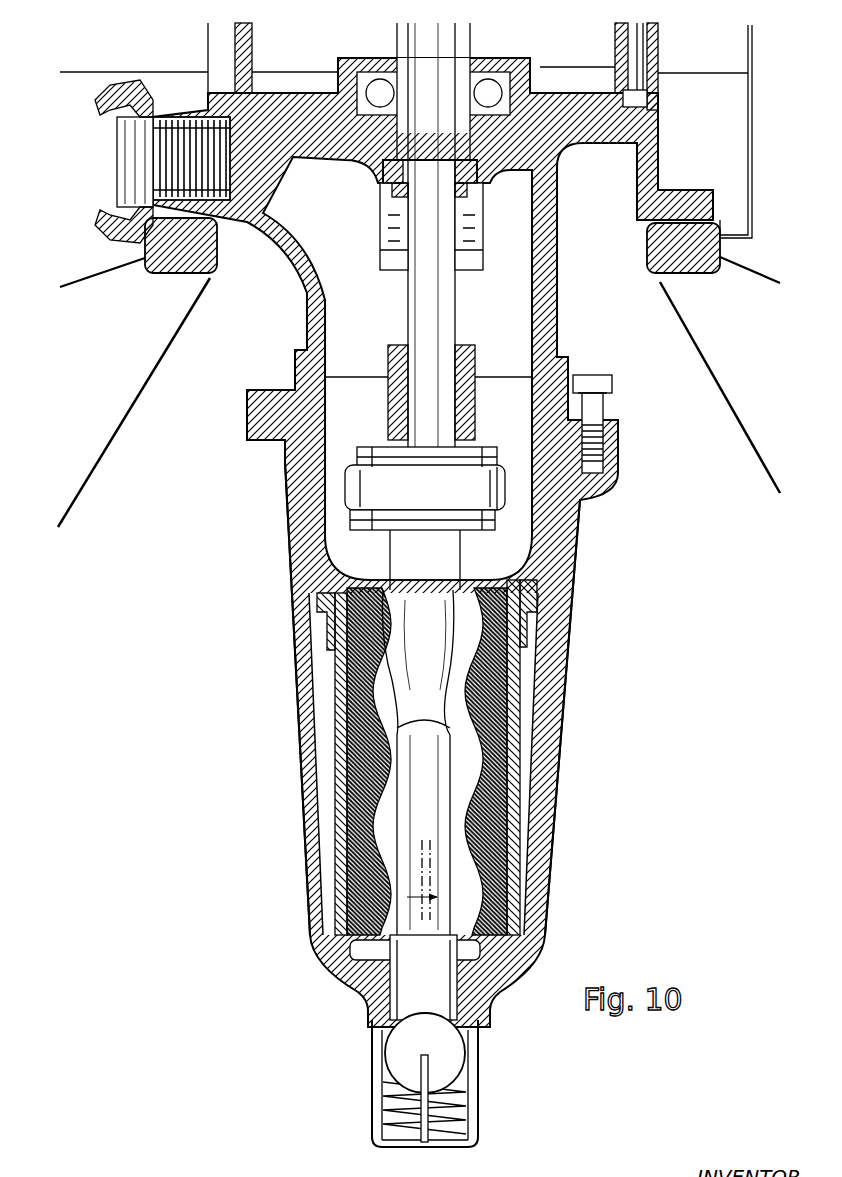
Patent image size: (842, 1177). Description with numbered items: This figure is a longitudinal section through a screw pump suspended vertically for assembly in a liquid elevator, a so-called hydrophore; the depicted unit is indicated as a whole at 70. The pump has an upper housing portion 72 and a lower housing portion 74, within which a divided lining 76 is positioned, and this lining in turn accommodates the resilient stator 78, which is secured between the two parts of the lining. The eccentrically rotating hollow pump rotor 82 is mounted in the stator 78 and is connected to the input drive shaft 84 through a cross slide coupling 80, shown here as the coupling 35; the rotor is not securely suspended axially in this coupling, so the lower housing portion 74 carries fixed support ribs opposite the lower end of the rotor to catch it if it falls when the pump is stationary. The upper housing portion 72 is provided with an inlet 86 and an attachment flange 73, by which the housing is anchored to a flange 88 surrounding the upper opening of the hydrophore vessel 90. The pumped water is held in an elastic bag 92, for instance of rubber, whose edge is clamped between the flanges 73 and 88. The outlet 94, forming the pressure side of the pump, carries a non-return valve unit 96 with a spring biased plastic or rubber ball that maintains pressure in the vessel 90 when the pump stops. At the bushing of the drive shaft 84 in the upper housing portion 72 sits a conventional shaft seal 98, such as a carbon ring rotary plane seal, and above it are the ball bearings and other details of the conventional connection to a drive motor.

The flexible coupling 35 is at (506, 472).
The pump unit 70 is at (604, 502).
The upper housing portion 72 is at (548, 323).
The attachment flange 73 is at (683, 192).
The lower housing portion 74 is at (562, 657).
The divided lining 76 is at (335, 660).
The resilient stator 78 is at (360, 769).
The cross slide coupling 80 is at (372, 442).
The pump rotor 82 is at (450, 693).
The input drive shaft 84 is at (440, 321).
The inlet 86 is at (286, 194).
The flange 88 is at (176, 268).
The hydrophore vessel 90 is at (74, 284).
The elastic bag 92 is at (112, 434).
The outlet bore 94 is at (440, 1010).
The non-return valve unit 96 is at (481, 1077).
The shaft seal 98 is at (379, 229).